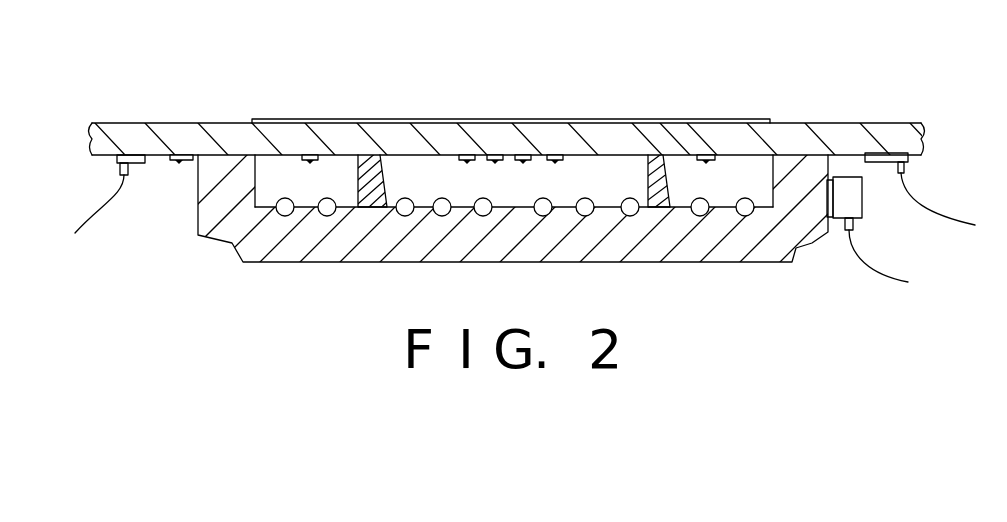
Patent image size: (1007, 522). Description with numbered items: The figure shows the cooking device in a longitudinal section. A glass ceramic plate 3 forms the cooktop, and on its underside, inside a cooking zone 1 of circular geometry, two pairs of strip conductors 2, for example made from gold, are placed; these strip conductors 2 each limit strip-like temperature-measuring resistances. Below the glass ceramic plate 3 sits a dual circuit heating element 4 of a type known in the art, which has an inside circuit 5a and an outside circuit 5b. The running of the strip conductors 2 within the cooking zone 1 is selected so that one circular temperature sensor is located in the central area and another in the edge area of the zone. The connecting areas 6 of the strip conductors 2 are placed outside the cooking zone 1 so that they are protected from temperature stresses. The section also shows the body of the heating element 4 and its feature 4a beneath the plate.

The cooking zone 1 is at (280, 120).
The strip conductors 2 is at (660, 122).
The glass ceramic plate 3 is at (155, 142).
The dual circuit heating element 4 is at (275, 265).
The groove 4a is at (383, 212).
The inside circuit 5a is at (600, 205).
The outside circuit 5b is at (313, 207).
The connecting areas 6 is at (135, 165).